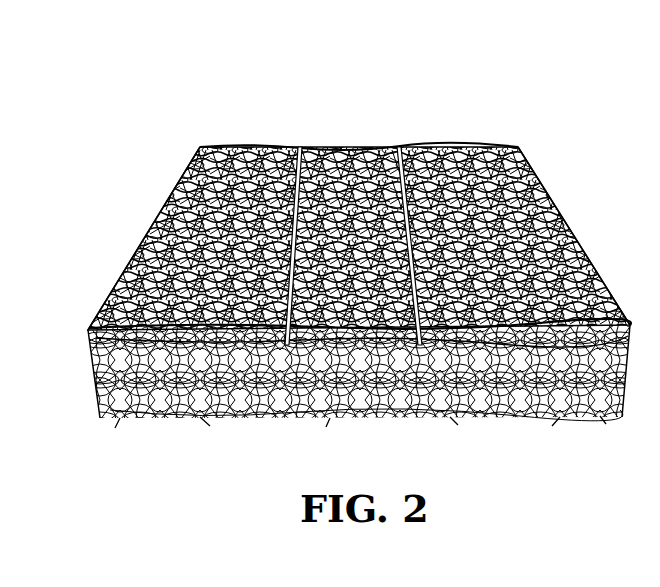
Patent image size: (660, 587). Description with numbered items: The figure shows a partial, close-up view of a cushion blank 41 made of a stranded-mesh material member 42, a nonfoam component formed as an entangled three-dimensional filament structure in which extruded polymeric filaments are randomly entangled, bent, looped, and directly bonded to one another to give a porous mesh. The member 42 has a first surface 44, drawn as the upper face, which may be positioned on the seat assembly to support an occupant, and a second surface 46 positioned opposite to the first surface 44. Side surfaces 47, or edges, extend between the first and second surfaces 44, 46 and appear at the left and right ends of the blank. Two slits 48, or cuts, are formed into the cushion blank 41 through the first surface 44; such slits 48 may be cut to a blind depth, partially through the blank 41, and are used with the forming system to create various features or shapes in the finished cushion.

The cushion blank 41 is at (158, 108).
The stranded-mesh material member 42 is at (359, 268).
The first surface 44 is at (437, 147).
The second surface 46 is at (437, 415).
The side surfaces 47 is at (92, 360).
The slits 48 is at (302, 147).